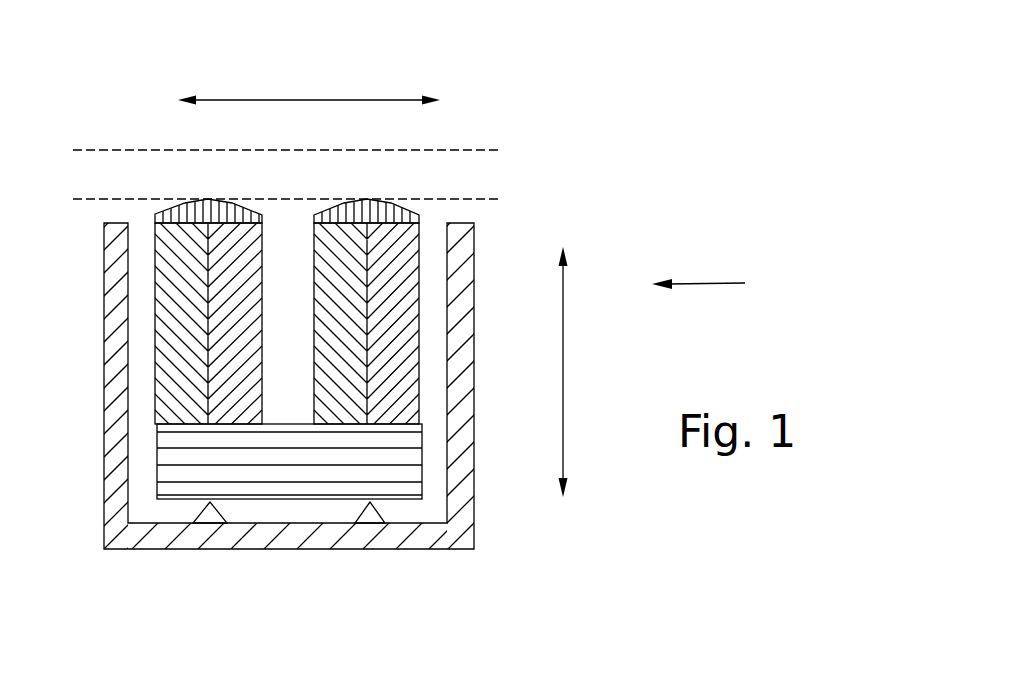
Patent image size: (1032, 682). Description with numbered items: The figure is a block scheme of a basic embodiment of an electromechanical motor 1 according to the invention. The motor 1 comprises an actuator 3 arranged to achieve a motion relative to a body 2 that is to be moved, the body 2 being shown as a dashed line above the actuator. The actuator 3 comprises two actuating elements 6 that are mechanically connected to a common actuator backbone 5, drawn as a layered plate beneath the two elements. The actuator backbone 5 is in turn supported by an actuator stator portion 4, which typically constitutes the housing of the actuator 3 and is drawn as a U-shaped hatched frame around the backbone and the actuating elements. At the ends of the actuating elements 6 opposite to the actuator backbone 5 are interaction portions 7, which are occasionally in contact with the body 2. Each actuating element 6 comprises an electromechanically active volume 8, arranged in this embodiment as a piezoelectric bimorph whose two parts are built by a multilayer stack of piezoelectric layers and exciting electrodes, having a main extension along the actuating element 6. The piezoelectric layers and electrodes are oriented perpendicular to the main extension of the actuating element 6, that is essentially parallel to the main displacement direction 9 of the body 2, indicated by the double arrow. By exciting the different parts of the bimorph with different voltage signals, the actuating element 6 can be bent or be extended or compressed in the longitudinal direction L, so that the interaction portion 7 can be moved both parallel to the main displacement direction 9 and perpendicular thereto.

The electromechanical motor 1 is at (660, 91).
The body 2 is at (116, 150).
The actuator 3 is at (710, 280).
The actuator stator portion 4 is at (158, 548).
The actuator backbone 5 is at (275, 475).
The actuating element 6 is at (155, 325).
The interaction portion 7 is at (155, 214).
The electromechanically active volume 8 is at (167, 385).
The main displacement direction 9 is at (309, 84).
The longitudinal direction L is at (572, 372).